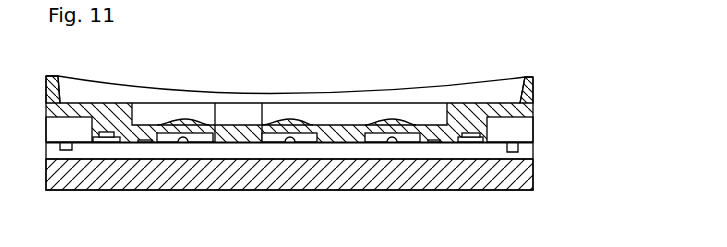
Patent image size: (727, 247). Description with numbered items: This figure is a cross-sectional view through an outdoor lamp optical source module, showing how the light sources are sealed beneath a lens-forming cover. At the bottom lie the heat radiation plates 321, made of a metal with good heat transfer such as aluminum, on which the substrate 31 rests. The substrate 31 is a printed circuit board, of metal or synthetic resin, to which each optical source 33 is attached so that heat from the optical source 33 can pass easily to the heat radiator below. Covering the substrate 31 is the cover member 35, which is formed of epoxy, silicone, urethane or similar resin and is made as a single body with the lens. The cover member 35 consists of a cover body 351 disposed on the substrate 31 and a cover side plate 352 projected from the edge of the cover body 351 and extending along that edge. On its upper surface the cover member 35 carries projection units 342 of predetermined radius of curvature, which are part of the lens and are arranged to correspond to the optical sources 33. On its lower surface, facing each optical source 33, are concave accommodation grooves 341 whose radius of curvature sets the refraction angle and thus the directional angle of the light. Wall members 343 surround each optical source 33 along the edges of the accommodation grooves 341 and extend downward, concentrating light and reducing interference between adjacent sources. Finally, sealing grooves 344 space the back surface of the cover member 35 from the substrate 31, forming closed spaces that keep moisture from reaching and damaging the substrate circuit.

The cover member 35 is at (341, 101).
The cover side plate 352 is at (533, 87).
The cover body 351 is at (478, 117).
The projection units 342 is at (283, 122).
The wall members 343 is at (162, 135).
The accommodation grooves 341 is at (372, 133).
The optical source 33 is at (392, 142).
The sealing grooves 344 is at (148, 142).
The substrate 31 is at (528, 152).
The heat radiation plates 321 is at (528, 178).